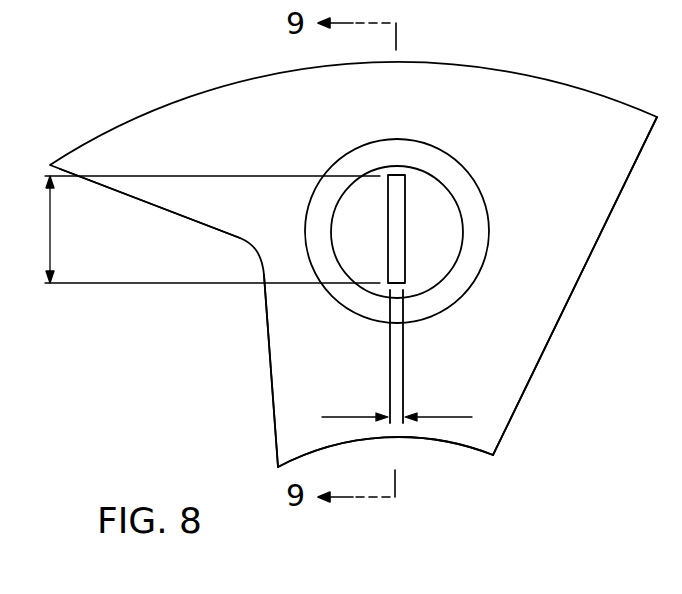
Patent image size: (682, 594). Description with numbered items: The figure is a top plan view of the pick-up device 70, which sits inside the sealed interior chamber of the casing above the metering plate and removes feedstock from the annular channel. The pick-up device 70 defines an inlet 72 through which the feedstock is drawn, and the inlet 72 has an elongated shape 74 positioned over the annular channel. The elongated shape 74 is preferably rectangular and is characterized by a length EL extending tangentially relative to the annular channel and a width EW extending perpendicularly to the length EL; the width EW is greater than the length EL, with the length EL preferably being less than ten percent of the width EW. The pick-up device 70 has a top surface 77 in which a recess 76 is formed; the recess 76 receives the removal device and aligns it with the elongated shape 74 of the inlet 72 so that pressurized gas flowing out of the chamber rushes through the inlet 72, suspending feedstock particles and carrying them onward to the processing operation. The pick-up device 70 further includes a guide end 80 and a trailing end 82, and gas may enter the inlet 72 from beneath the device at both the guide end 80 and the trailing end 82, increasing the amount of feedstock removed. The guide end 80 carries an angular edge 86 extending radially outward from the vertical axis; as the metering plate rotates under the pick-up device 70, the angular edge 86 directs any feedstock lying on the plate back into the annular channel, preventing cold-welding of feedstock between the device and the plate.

The pick-up device 70 is at (498, 68).
The inlet 72 is at (397, 187).
The elongated shape 74 is at (405, 257).
The recess 76 is at (474, 247).
The top surface 77 is at (497, 395).
The guide end 80 is at (152, 205).
The trailing end 82 is at (548, 353).
The angular edge 86 is at (265, 352).
The width of the elongated shape EW is at (206, 229).
The length of the elongated shape EL is at (395, 418).